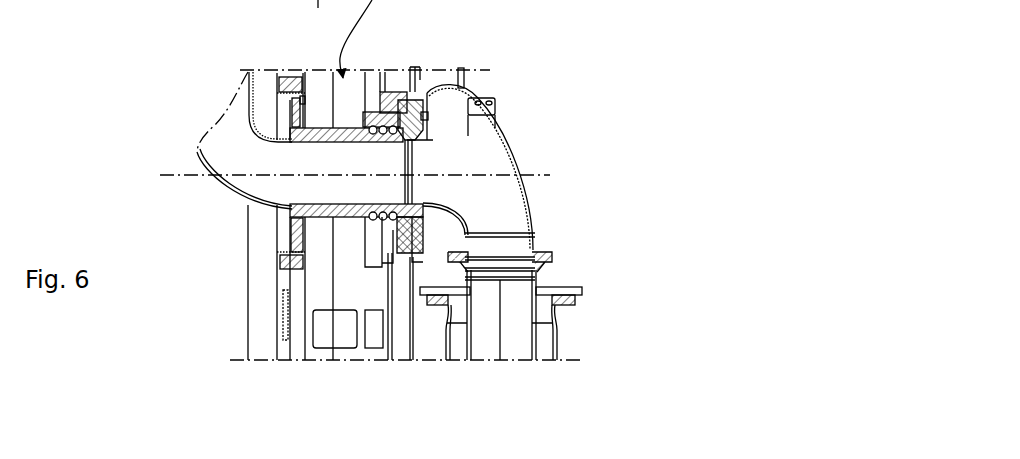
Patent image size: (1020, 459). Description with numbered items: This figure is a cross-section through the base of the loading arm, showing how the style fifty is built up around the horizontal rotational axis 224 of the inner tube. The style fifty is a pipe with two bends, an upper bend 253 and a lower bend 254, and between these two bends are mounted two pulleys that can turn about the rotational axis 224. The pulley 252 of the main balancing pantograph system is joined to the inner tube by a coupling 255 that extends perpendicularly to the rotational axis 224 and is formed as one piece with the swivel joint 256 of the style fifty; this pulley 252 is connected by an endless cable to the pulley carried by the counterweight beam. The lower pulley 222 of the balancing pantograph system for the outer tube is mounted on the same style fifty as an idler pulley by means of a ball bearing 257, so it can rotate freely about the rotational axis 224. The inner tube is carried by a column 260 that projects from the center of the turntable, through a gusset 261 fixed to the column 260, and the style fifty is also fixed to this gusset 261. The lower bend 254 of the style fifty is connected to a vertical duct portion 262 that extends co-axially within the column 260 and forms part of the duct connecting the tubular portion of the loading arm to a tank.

The lower pulley 222 is at (412, 93).
The rotational axis 224 is at (537, 172).
The pulley 252 is at (305, 76).
The bend 253 is at (210, 177).
The lower bend 254 is at (528, 200).
The coupling 255 is at (292, 231).
The swivel joint 256 is at (353, 228).
The ball bearing 257 is at (478, 106).
The column 260 is at (553, 332).
The gusset 261 is at (560, 270).
The vertical duct portion 262 is at (465, 347).